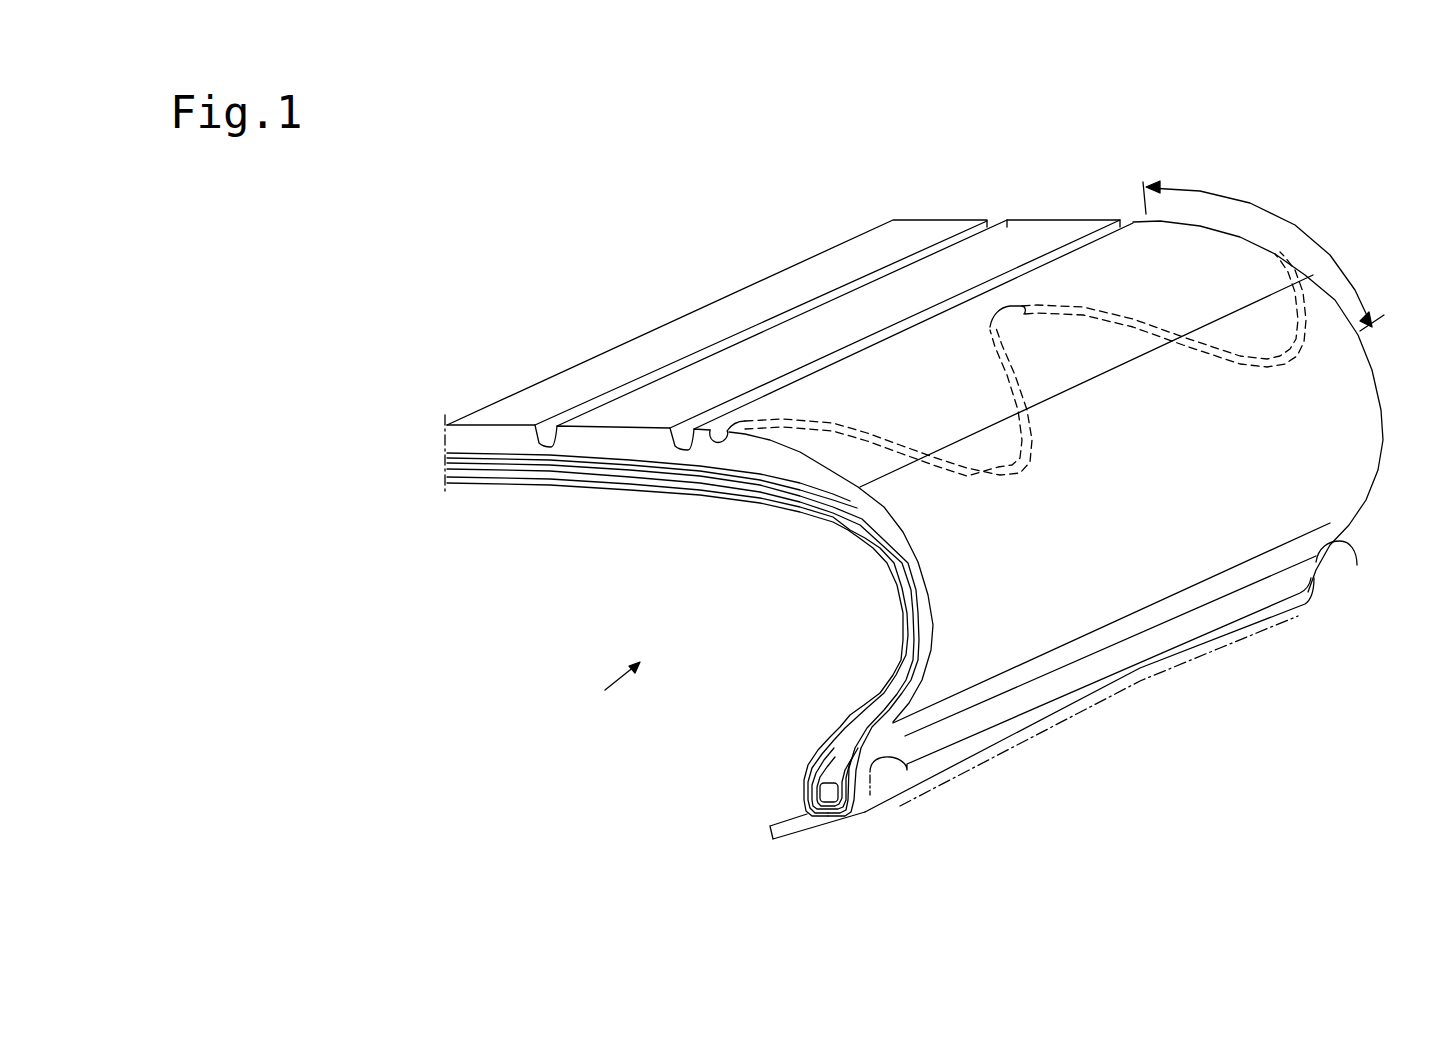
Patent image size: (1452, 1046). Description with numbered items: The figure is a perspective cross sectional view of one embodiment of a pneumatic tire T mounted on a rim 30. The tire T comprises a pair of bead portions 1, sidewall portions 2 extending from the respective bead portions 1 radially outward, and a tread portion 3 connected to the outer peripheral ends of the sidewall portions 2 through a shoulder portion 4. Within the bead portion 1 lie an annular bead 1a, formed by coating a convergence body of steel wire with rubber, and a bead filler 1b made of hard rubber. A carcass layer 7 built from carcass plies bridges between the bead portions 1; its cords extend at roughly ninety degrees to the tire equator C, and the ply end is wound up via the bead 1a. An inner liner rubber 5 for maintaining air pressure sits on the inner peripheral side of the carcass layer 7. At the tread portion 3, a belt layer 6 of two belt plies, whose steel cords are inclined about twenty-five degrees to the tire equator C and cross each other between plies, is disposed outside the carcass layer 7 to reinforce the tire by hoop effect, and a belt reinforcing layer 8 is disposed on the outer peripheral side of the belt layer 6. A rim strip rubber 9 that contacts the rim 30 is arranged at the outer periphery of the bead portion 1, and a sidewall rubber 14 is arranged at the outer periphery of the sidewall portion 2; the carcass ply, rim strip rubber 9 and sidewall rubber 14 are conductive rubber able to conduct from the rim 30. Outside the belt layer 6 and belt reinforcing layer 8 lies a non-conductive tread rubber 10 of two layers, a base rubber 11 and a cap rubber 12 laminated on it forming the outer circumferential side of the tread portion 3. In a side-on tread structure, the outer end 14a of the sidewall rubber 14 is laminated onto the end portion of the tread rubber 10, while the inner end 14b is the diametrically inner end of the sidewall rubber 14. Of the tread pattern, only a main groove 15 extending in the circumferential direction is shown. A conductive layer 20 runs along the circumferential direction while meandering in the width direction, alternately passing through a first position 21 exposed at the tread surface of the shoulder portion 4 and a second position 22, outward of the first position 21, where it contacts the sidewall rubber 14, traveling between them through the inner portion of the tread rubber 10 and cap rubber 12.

The bead portion 1 is at (996, 770).
The bead 1a is at (823, 789).
The bead filler 1b is at (840, 748).
The sidewall portion 2 is at (1380, 493).
The tread portion 3 is at (1076, 210).
The shoulder portion 4 is at (1263, 256).
The inner liner rubber 5 is at (790, 500).
The belt layer 6 is at (620, 470).
The carcass layer 7 is at (887, 563).
The belt reinforcing layer 8 is at (698, 476).
The rim strip rubber 9 is at (1127, 673).
The tread rubber 10 is at (652, 516).
The base rubber 11 is at (487, 457).
The cap rubber 12 is at (523, 452).
The sidewall rubber 14 is at (1375, 433).
The outer end of the sidewall rubber 14a is at (1121, 372).
The inner end of the sidewall rubber 14b is at (1197, 590).
The main groove 15 is at (767, 387).
The conductive layer 20 is at (905, 442).
The first position 21 is at (717, 428).
The second position 22 is at (1293, 352).
The rim 30 is at (1064, 724).
The tire equator C is at (446, 436).
The pneumatic tire T is at (611, 694).